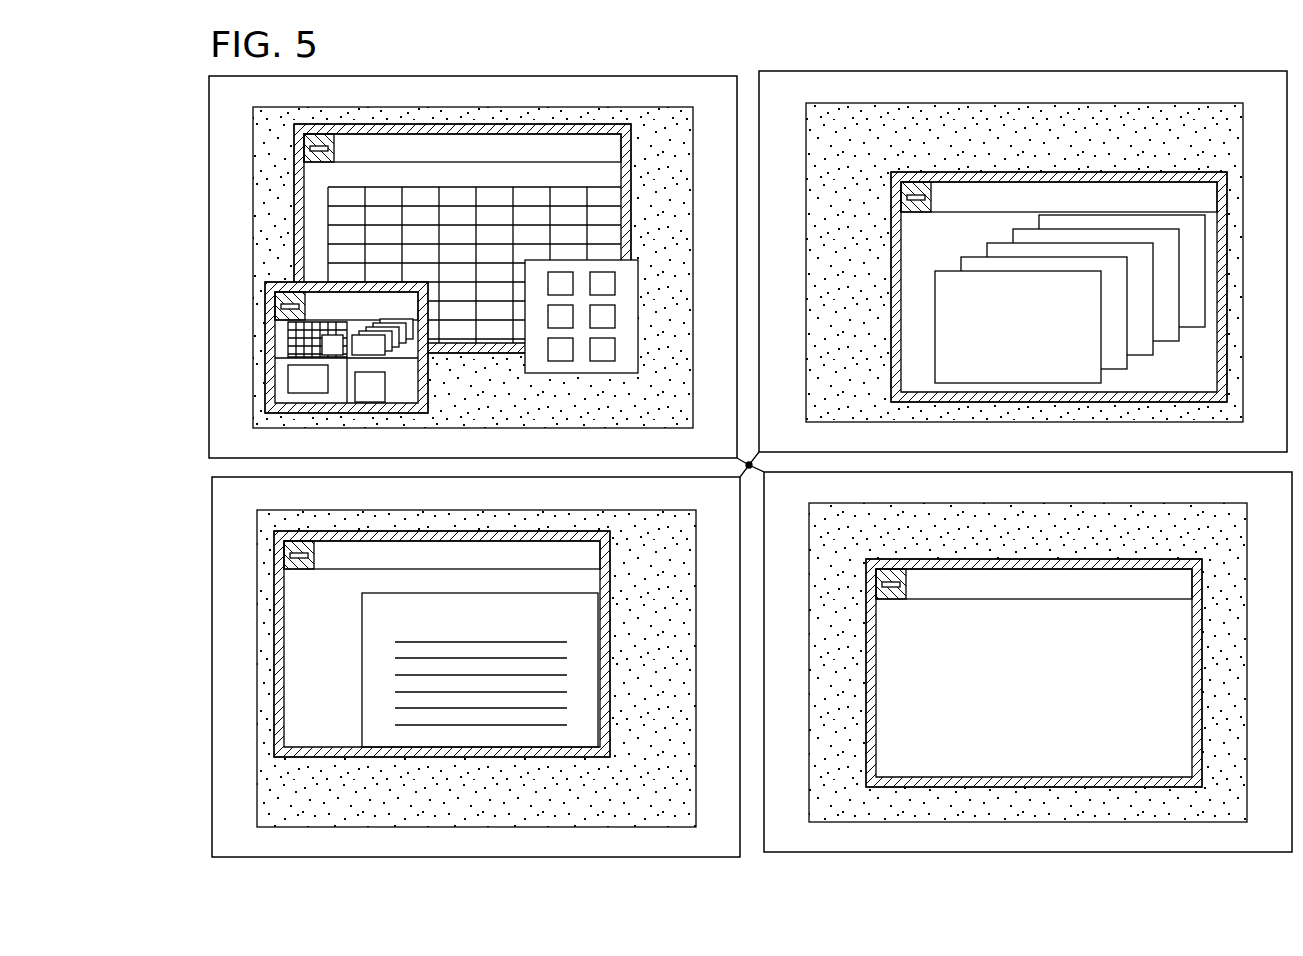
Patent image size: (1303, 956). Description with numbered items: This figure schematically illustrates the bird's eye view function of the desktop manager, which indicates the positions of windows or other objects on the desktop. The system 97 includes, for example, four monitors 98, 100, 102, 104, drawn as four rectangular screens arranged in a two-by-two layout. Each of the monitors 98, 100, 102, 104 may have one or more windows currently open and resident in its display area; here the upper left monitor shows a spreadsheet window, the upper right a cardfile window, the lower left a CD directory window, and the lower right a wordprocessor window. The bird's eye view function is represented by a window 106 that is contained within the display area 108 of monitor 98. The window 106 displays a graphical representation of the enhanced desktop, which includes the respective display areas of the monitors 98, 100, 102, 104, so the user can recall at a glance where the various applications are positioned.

The system 97 is at (718, 62).
The monitor 98 is at (403, 77).
The monitor 100 is at (1075, 71).
The monitor 102 is at (583, 858).
The monitor 104 is at (862, 853).
The window 106 is at (429, 377).
The display area 108 is at (682, 416).